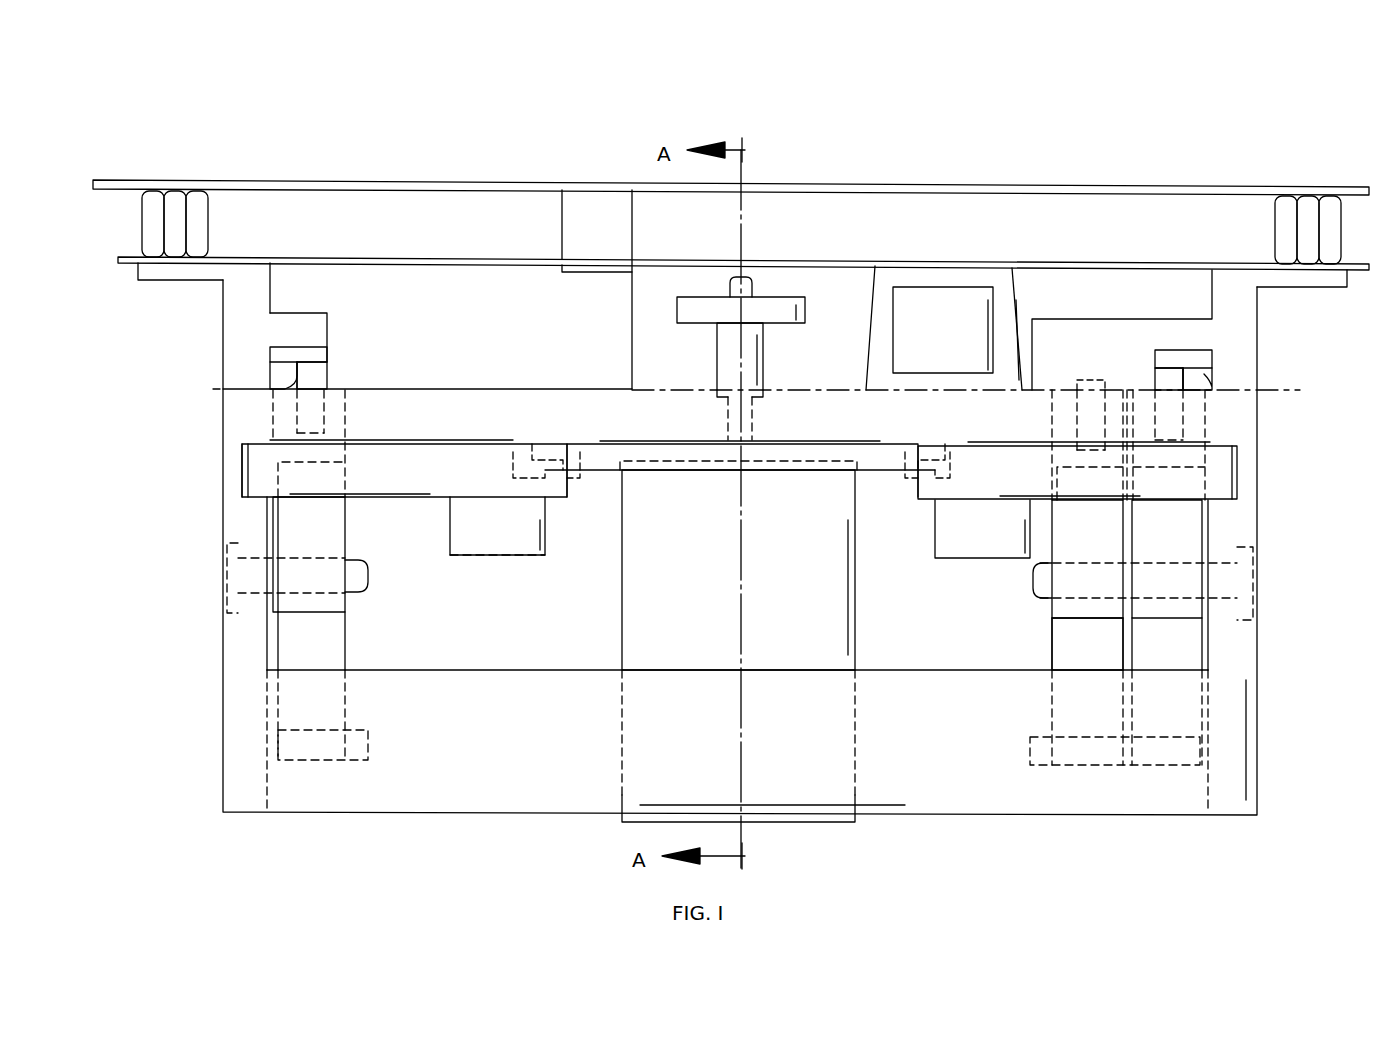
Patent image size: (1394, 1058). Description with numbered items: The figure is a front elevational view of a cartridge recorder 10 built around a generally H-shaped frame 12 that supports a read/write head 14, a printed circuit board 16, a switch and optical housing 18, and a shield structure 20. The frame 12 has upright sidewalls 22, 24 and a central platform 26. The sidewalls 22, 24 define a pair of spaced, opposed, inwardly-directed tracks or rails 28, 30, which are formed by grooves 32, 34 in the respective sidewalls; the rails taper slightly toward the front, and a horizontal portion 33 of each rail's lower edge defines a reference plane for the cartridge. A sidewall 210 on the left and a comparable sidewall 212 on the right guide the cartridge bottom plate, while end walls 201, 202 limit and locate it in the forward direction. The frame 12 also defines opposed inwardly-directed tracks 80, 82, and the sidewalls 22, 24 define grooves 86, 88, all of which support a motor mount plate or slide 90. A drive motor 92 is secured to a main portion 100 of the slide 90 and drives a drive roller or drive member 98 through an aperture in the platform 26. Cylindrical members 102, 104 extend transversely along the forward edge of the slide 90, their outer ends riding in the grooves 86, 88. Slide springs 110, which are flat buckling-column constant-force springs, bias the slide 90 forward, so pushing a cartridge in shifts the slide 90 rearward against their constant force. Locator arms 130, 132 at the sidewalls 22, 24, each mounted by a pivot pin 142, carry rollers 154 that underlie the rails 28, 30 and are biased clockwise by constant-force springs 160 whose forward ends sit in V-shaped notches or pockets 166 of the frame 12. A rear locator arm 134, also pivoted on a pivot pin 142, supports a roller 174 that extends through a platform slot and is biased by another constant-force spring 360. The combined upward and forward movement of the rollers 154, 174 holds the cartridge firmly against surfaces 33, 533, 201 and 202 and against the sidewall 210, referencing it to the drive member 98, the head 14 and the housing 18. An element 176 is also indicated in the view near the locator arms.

The cartridge recorder 10 is at (303, 130).
The frame 12 is at (198, 389).
The read/write head 14 is at (994, 261).
The printed circuit board 16 is at (760, 186).
The switch and optical housing 18 is at (398, 222).
The shield structure 20 is at (897, 262).
The sidewall 22 is at (230, 520).
The sidewall 24 is at (1258, 460).
The central platform 26 is at (740, 422).
The track or rail 28 is at (322, 340).
The track or rail 30 is at (1168, 325).
The groove 32 is at (283, 372).
The horizontal portion 33 is at (292, 362).
The groove 34 is at (1196, 384).
The track 80 is at (570, 480).
The track 82 is at (912, 478).
The groove 86 is at (240, 452).
The groove 88 is at (1240, 452).
The motor mount plate or slide 90 is at (690, 482).
The drive motor 92 is at (763, 646).
The drive roller or drive member 98 is at (783, 300).
The main portion 100 is at (808, 462).
The cylindrical member 102 is at (258, 478).
The cylindrical member 104 is at (1222, 485).
The slide spring 110 is at (450, 527).
The locator arm 130 is at (330, 535).
The locator arm 132 is at (1195, 590).
The rear locator arm 134 is at (1050, 582).
The pivot pin 142 is at (366, 582).
The roller 154 is at (318, 378).
The constant-force spring 160 is at (290, 705).
The notch or pocket 166 is at (360, 742).
The roller 174 is at (1080, 387).
The guide 176 is at (1052, 520).
The end wall 201 is at (322, 357).
The end wall 202 is at (1180, 372).
The sidewall 210 is at (272, 372).
The sidewall 212 is at (1208, 382).
The constant-force spring 360 is at (1070, 657).
The surface 533 is at (1185, 375).